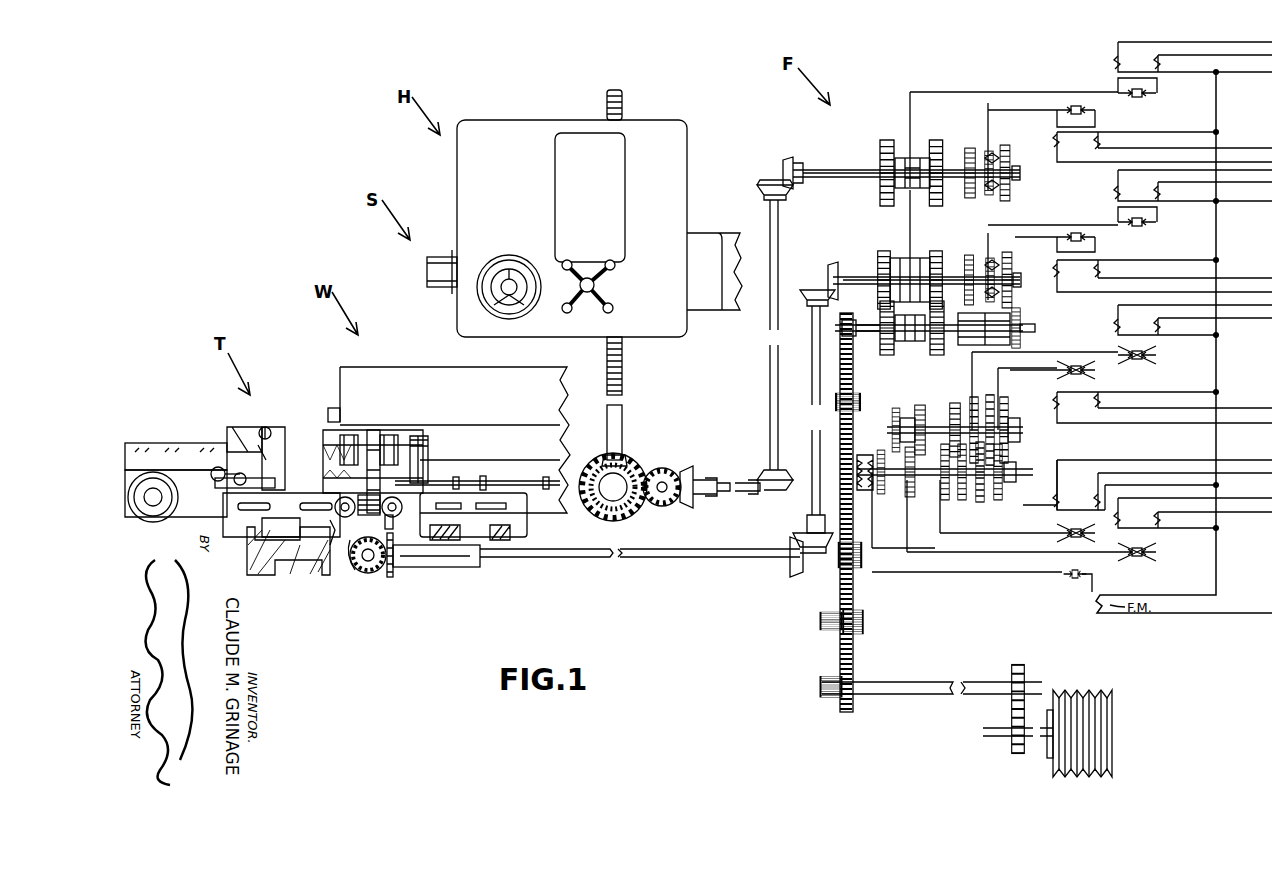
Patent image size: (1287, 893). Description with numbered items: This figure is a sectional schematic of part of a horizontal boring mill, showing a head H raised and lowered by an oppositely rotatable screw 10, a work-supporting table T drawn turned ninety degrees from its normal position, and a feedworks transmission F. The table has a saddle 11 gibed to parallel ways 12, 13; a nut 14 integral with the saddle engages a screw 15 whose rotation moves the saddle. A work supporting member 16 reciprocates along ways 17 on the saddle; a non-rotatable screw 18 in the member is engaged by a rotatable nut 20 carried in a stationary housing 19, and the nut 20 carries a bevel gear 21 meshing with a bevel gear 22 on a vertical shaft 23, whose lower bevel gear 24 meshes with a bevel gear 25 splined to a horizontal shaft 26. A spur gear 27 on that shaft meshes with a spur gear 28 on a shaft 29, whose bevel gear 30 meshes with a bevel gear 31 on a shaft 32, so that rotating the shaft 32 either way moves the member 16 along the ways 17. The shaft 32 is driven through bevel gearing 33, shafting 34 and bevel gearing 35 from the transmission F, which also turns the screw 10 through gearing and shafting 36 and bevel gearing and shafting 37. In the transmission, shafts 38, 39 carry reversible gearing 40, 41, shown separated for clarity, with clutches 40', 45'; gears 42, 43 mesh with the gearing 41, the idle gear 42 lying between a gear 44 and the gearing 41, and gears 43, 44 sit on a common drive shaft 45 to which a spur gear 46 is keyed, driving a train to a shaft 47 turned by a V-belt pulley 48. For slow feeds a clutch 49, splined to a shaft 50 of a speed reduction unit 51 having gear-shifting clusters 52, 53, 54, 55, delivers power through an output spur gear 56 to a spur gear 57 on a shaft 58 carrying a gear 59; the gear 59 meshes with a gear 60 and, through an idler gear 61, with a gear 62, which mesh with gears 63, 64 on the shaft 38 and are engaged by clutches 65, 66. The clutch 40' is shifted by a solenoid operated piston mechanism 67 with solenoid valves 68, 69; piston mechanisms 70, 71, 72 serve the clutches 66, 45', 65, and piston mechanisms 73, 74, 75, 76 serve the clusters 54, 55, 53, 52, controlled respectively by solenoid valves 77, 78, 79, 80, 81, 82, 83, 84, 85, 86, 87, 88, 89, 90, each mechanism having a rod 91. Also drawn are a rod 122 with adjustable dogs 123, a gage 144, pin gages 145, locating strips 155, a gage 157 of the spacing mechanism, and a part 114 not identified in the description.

The screw 10 is at (605, 106).
The saddle 11 is at (223, 505).
The way 12 is at (292, 550).
The way 13 is at (488, 535).
The nut 14 is at (300, 527).
The screw 15 is at (335, 535).
The work supporting member 16 is at (558, 455).
The ways 17 is at (160, 443).
The screw 18 is at (430, 448).
The housing 19 is at (473, 515).
The nut 20 is at (400, 433).
The bevel gear 21 is at (380, 434).
The bevel gear 22 is at (365, 434).
The shaft 23 is at (322, 462).
The bevel gear 24 is at (285, 505).
The bevel gear 25 is at (368, 514).
The shaft 26 is at (345, 520).
The spur gear 27 is at (398, 527).
The spur gear 28 is at (352, 572).
The shaft 29 is at (370, 562).
The bevel gear 30 is at (391, 570).
The bevel gear 31 is at (400, 567).
The shaft 32 is at (548, 560).
The bevel gearing 33 is at (818, 548).
The shafting 34 is at (812, 380).
The bevel gearing 35 is at (825, 285).
The gearing and shafting 36 is at (672, 452).
The bevel gearing and shafting 37 is at (772, 180).
The shaft 38 is at (845, 170).
The shaft 39 is at (872, 277).
The reversible gearing 40 is at (901, 159).
The clutch 40' is at (896, 148).
The reversible gearing 41 is at (882, 250).
The idle gear 42 is at (908, 342).
The gear 43 is at (937, 356).
The gear 44 is at (886, 357).
The drive shaft 45 is at (861, 313).
The clutch 45' is at (905, 246).
The spur gear 46 is at (840, 340).
The shaft 47 is at (922, 682).
The V-belt pulley 48 is at (1100, 697).
The clutch 49 is at (870, 454).
The shaft 50 is at (890, 480).
The speed reduction unit 51 is at (1020, 432).
The gear-shifting cluster 52 is at (912, 490).
The gear-shifting cluster 53 is at (950, 488).
The gear-shifting cluster 54 is at (970, 395).
The gear-shifting cluster 55 is at (998, 384).
The spur gear 56 is at (1016, 412).
The spur gear 57 is at (1020, 313).
The shaft 58 is at (1035, 326).
The gear 59 is at (1015, 352).
The gear 60 is at (1014, 272).
The idler gear 61 is at (965, 345).
The gear 62 is at (970, 256).
The gear 63 is at (972, 148).
The gear 64 is at (1012, 150).
The clutch 65 is at (996, 262).
The clutch 66 is at (992, 148).
The solenoid operated piston mechanism 67 is at (1137, 98).
The solenoid valve 68 is at (1115, 62).
The solenoid valve 69 is at (1157, 62).
The solenoid operated piston mechanism 70 is at (1080, 102).
The solenoid operated piston mechanism 71 is at (1137, 227).
The solenoid operated piston mechanism 72 is at (1080, 230).
The solenoid operated piston mechanism 73 is at (1138, 360).
The solenoid operated piston mechanism 74 is at (1080, 364).
The solenoid operated piston mechanism 75 is at (1057, 536).
The solenoid operated piston mechanism 76 is at (1137, 560).
The solenoid operated valve 77 is at (1085, 140).
The solenoid operated valve 78 is at (1100, 142).
The solenoid operated valve 79 is at (1115, 192).
The solenoid operated valve 80 is at (1157, 192).
The solenoid operated valve 81 is at (1060, 270).
The solenoid operated valve 82 is at (1100, 270).
The solenoid valve 83 is at (1120, 330).
The solenoid valve 84 is at (1160, 329).
The solenoid valve 85 is at (1060, 402).
The solenoid valve 86 is at (1100, 401).
The solenoid valve 87 is at (1036, 486).
The solenoid valve 88 is at (1096, 500).
The solenoid valve 89 is at (1121, 523).
The solenoid valve 90 is at (1160, 521).
The rod 91 is at (1014, 92).
The adjusting knob 114 is at (214, 472).
The rod 122 is at (515, 480).
The adjustable dog 123 is at (546, 490).
The gage 144 is at (272, 426).
The pin gage 145 is at (227, 428).
The locating strip 155 is at (334, 406).
The gage 157 is at (215, 487).